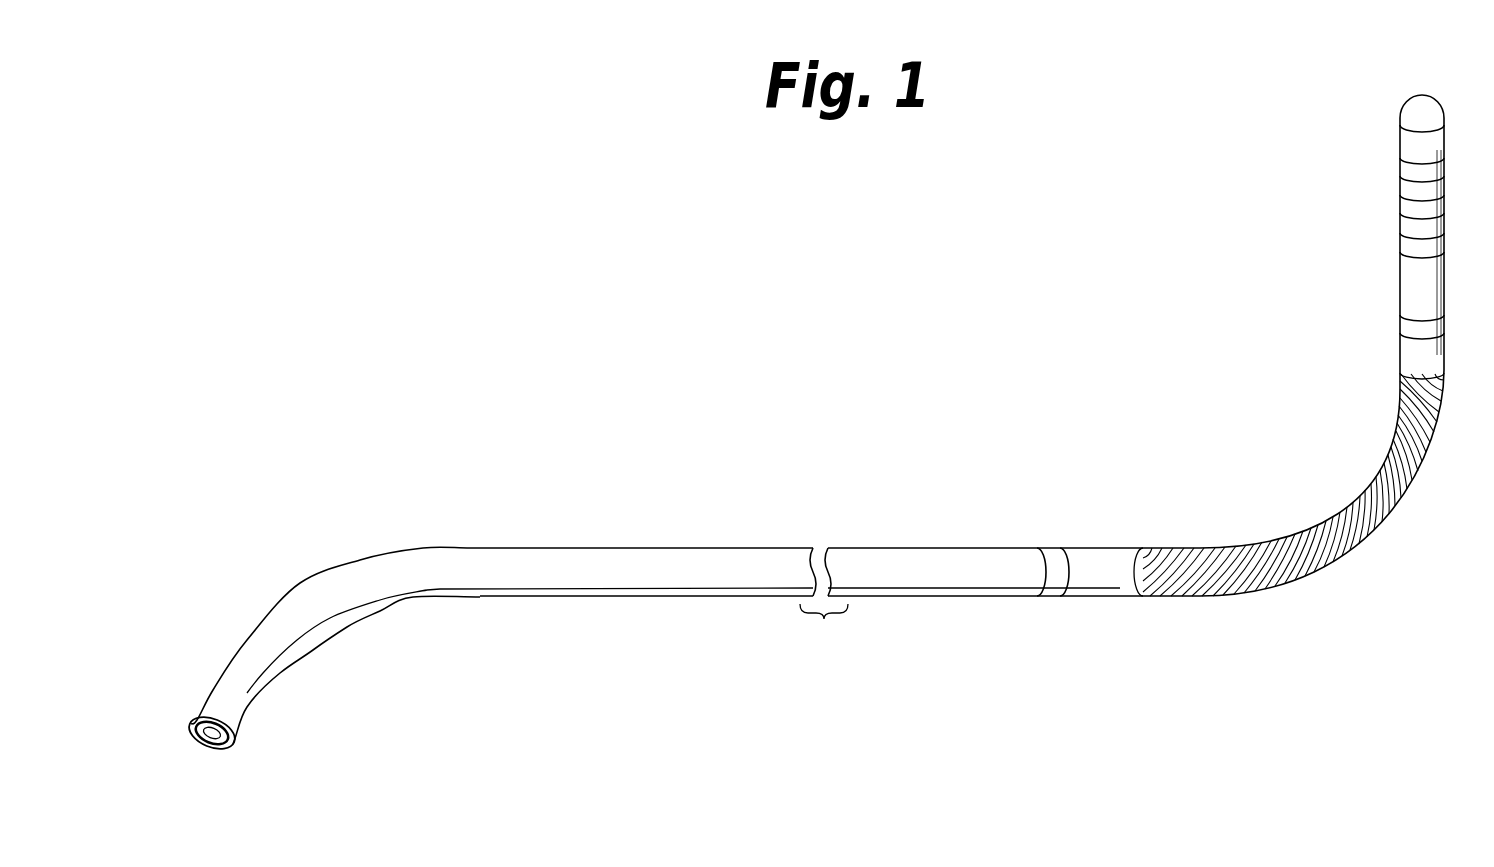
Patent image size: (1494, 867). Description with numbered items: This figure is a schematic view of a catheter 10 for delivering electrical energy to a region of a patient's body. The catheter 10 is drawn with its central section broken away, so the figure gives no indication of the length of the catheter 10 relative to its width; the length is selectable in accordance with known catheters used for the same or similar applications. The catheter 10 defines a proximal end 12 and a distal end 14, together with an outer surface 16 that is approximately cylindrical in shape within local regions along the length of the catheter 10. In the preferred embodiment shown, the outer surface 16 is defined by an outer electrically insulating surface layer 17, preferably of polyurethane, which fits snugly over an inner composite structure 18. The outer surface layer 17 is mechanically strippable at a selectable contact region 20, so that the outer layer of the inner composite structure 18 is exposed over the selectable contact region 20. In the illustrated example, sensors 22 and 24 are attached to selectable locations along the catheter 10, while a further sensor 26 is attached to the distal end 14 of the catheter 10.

The catheter 10 is at (682, 270).
The proximal end 12 is at (197, 677).
The distal end 14 is at (1284, 165).
The outer surface 16 is at (840, 632).
The outer electrically insulating surface layer 17 is at (938, 596).
The inner composite structure 18 is at (197, 762).
The selectable contact region 20 is at (1413, 462).
The sensor 22 is at (1047, 548).
The sensor 24 is at (1400, 243).
The sensor 26 is at (1405, 118).